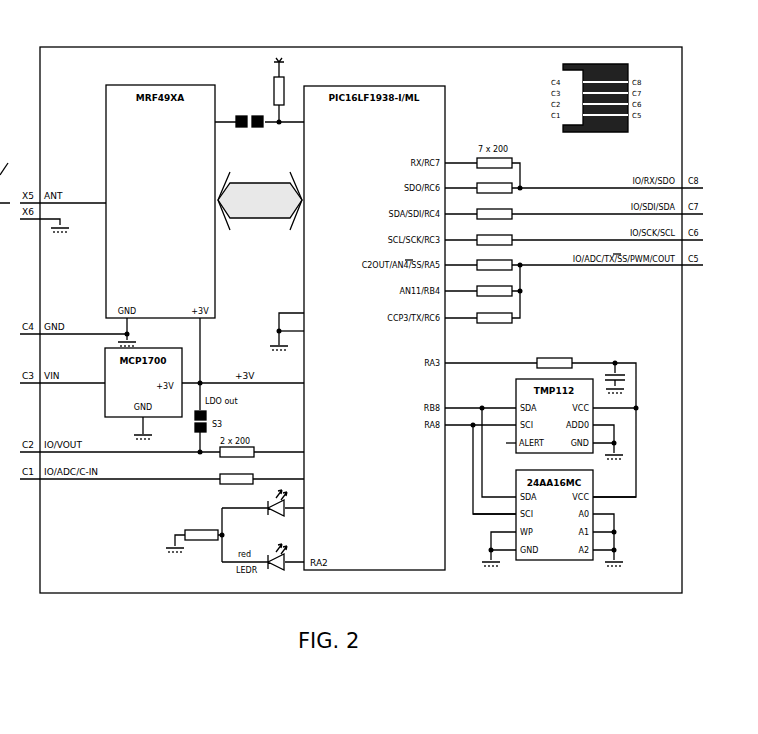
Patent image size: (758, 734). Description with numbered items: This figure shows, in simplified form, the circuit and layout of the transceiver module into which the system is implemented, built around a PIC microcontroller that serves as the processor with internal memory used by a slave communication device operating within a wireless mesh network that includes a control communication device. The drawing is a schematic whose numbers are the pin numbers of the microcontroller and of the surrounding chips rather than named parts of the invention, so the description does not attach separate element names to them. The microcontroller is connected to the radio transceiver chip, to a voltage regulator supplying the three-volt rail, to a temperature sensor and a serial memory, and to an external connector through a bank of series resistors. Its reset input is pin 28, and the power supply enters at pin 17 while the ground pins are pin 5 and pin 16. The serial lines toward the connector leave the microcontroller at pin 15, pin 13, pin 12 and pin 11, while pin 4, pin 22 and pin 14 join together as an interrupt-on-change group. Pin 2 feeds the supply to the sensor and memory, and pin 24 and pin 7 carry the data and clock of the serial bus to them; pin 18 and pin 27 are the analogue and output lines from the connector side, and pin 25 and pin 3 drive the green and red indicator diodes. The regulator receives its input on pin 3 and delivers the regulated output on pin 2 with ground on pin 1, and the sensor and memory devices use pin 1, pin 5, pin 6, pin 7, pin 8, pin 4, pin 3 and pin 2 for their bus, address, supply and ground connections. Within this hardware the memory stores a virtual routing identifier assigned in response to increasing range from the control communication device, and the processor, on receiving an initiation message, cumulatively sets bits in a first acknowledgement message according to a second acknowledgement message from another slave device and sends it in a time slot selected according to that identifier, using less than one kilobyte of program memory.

The ground pin / pin 1 is at (369, 455).
The pin 2 (RA3 / LDO output / GND) 2 is at (409, 441).
The pin 3 (VIN / RA2 / ALERT / A2) 3 is at (312, 466).
The pin 4 (C2OUT/AN4/SS/RA5) 4 is at (574, 393).
The pin 5 (GND / VCC / SDA) 5 is at (441, 399).
The pin 6 (SCI) 6 is at (494, 509).
The pin 7 (RA8 / SCI / GND) 7 is at (480, 481).
The pin 8 (VCC) 8 is at (614, 491).
The pin 11 (SCL/SCK/RC3 / GND) 11 is at (361, 288).
The pin 12 (SDA/SDI/RC4) 12 is at (574, 211).
The pin 13 (SDO/RC6) 13 is at (574, 185).
The pin 14 (CCP3/TX/RC6 / +3V) 14 is at (355, 337).
The pin 15 (RX/RC7) 15 is at (482, 169).
The pin 16 (GND) 16 is at (299, 335).
The pin 17 (VCC) 17 is at (309, 380).
The pin 18 (RC2) 18 is at (174, 449).
The pin 22 (AN11/RB4) 22 is at (493, 289).
The pin 24 (RB8) 24 is at (480, 446).
The pin 25 (RB7) 25 is at (275, 504).
The pin 27 (RA0/AN0/C12IN0-) 27 is at (204, 476).
The pin 28 (MCLR) 28 is at (275, 93).